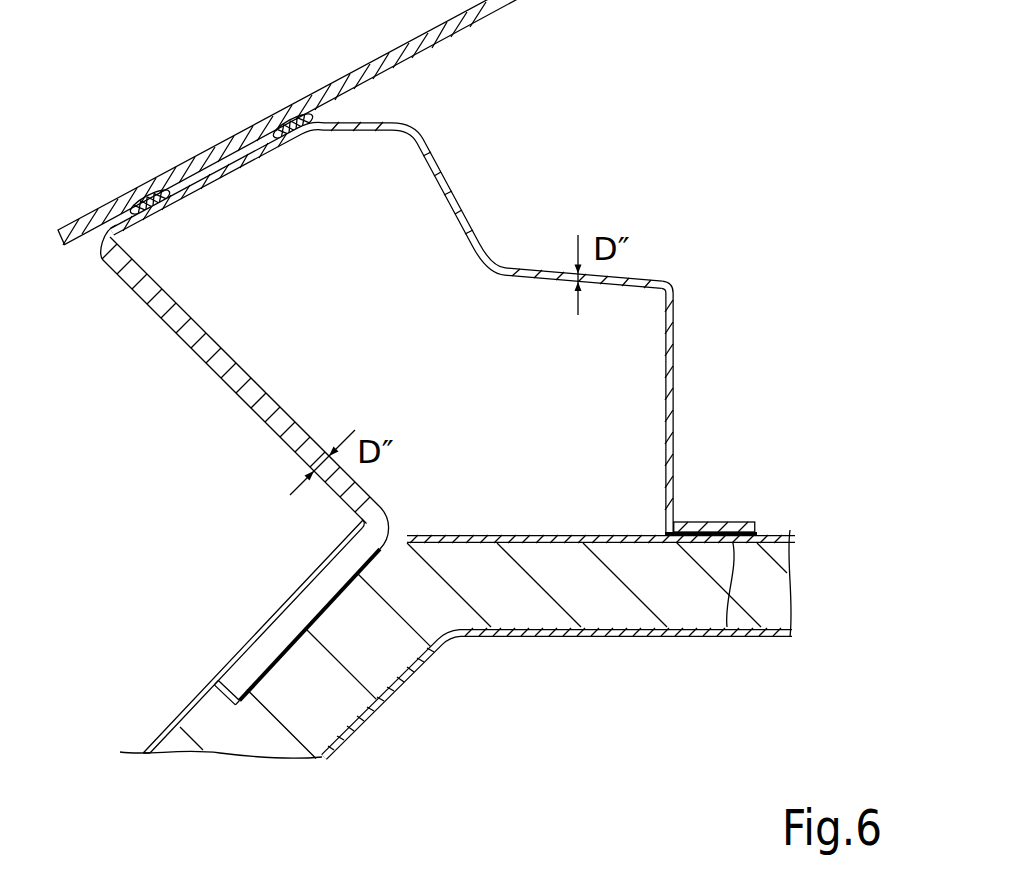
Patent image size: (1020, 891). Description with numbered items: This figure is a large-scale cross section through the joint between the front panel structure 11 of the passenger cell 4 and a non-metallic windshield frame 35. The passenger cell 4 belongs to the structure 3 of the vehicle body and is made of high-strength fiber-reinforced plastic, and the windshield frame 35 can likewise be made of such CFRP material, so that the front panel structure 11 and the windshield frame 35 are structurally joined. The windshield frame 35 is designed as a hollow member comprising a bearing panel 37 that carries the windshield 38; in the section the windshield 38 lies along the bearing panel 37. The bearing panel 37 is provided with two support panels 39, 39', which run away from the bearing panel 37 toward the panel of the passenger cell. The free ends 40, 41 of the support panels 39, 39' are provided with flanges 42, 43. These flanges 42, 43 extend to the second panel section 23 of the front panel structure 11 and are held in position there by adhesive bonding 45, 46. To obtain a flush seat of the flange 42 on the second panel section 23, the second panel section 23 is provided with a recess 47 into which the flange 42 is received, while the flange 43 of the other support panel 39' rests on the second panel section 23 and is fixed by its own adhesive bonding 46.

The structure 3 is at (148, 736).
The passenger cell 4 is at (483, 643).
The front panel structure 11 is at (622, 650).
The second panel section 23 is at (433, 650).
The windshield frame 35 is at (461, 352).
The bearing panel 37 is at (198, 196).
The windshield 38 is at (193, 157).
The support panel 39 is at (240, 374).
The support panel 39' is at (527, 218).
The free end 40 is at (346, 522).
The free end 41 is at (684, 504).
The flange 42 is at (312, 619).
The flange 43 is at (743, 521).
The adhesive bonding 45 is at (287, 668).
The adhesive bonding 46 is at (727, 627).
The recess 47 is at (238, 703).